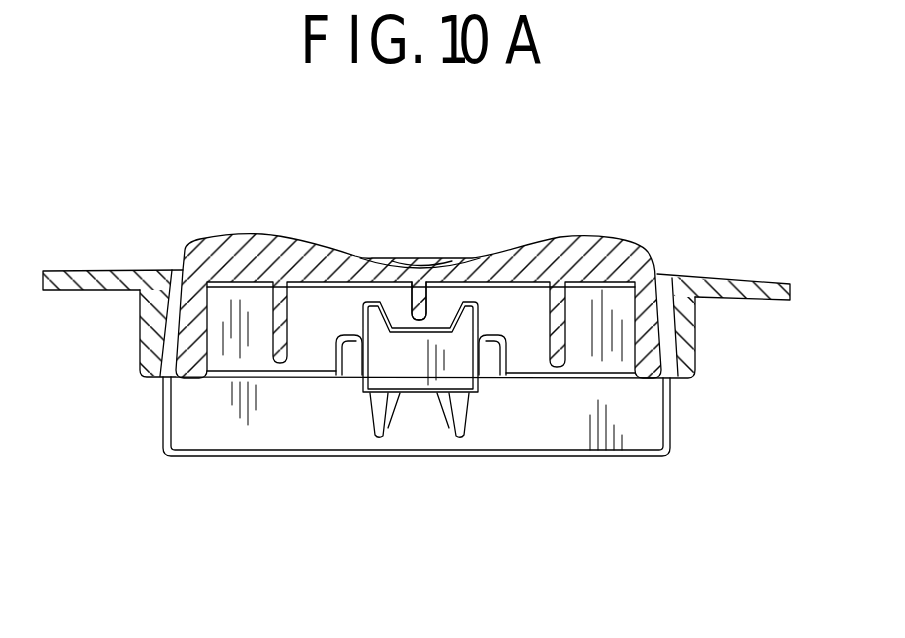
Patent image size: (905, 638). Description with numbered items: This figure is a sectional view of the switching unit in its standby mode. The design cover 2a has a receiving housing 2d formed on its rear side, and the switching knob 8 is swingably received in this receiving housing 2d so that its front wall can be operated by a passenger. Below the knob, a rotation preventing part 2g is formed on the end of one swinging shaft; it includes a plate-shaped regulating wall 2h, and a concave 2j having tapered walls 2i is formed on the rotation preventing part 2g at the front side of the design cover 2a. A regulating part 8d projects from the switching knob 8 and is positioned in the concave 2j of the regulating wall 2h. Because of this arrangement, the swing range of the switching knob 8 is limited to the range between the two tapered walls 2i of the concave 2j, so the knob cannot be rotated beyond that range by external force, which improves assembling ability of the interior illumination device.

The design cover 2a is at (738, 290).
The receiving housing 2d is at (687, 353).
The rotation preventing part 2g is at (477, 430).
The regulating wall 2h is at (417, 335).
The tapered walls 2i is at (358, 348).
The concave 2j is at (445, 293).
The switching knob 8 is at (285, 236).
The regulating part 8d is at (420, 295).